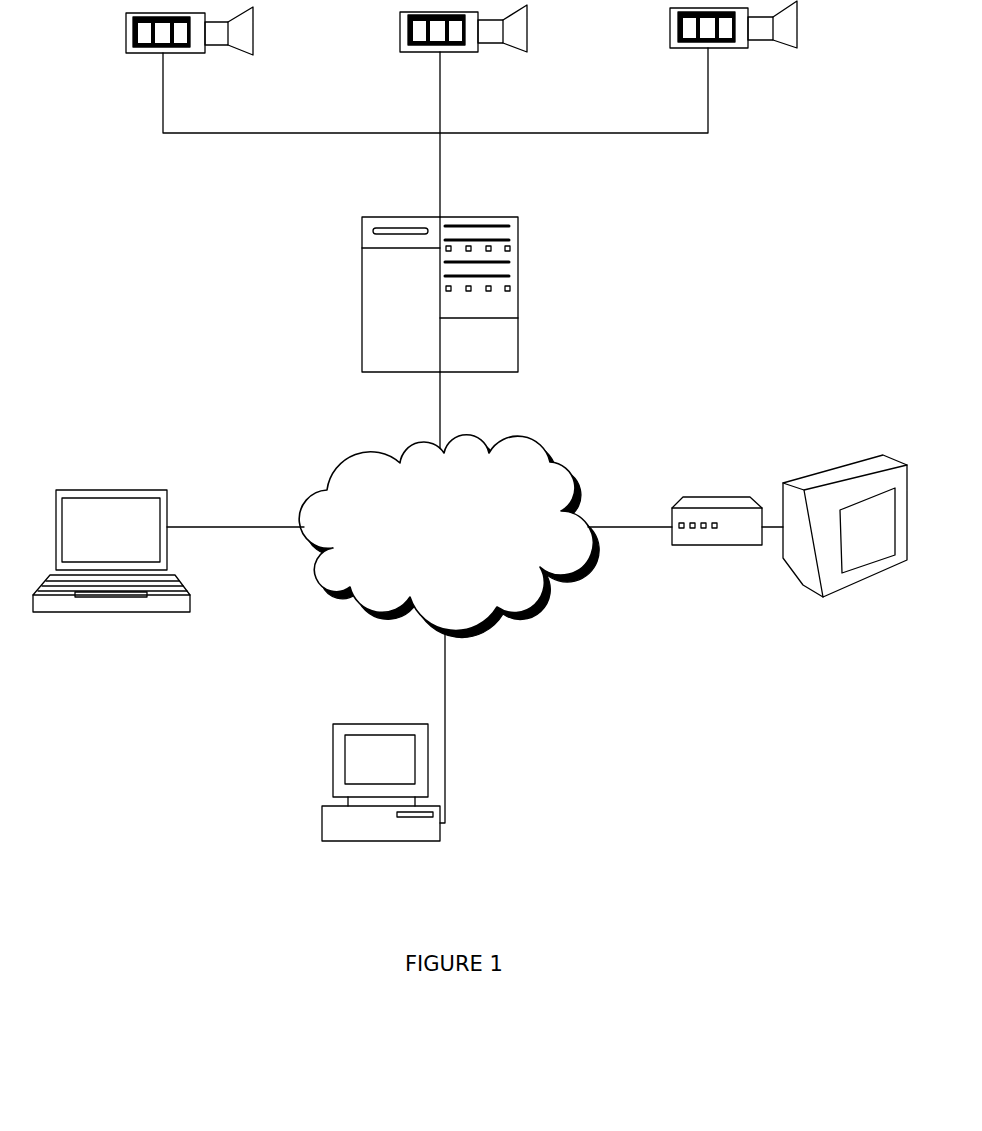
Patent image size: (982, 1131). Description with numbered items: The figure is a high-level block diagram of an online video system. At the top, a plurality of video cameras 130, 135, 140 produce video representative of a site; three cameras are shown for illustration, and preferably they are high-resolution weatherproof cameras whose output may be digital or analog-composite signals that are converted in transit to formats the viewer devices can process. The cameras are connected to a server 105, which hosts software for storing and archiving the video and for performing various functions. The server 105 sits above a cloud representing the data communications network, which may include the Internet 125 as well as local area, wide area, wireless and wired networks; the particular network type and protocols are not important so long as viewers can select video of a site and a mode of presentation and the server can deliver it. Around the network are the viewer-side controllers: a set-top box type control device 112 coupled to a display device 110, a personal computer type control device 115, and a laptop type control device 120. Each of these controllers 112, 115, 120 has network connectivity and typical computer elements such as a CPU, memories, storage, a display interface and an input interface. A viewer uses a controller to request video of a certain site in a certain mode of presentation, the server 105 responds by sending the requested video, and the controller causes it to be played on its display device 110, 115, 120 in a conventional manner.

The server 105 is at (440, 294).
The display device 110 is at (845, 526).
The control device 112 is at (717, 521).
The control device 115 is at (381, 782).
The control device 120 is at (111, 551).
The Internet 125 is at (449, 536).
The camera 130 is at (189, 50).
The camera 135 is at (463, 49).
The camera 140 is at (733, 45).